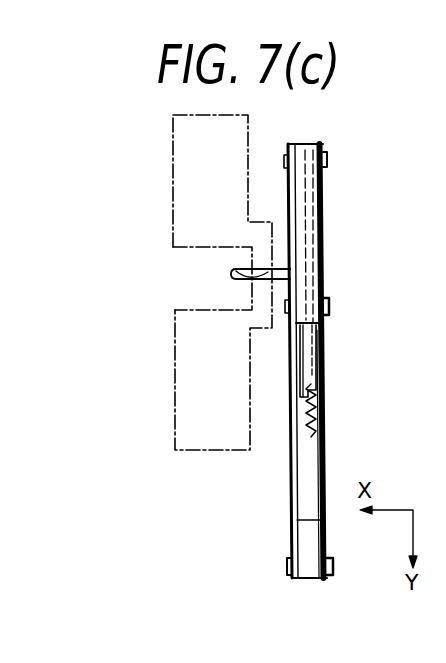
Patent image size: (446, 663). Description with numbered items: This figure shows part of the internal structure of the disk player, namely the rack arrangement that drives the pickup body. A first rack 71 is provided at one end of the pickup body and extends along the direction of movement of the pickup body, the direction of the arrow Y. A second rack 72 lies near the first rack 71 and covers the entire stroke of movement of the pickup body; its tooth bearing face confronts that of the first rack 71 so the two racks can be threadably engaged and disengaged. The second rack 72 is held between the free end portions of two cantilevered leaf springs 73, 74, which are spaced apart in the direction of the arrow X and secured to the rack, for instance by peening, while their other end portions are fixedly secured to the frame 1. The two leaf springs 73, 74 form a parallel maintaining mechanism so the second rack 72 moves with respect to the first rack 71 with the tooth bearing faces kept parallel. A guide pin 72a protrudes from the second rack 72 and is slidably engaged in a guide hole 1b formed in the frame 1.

The frame 1 is at (172, 417).
The guide hole 1b is at (233, 269).
The guide pin 72a is at (234, 279).
The second rack 72 is at (327, 285).
The first rack 71 is at (318, 376).
The leaf spring 74 is at (326, 447).
The leaf spring 73 is at (293, 473).